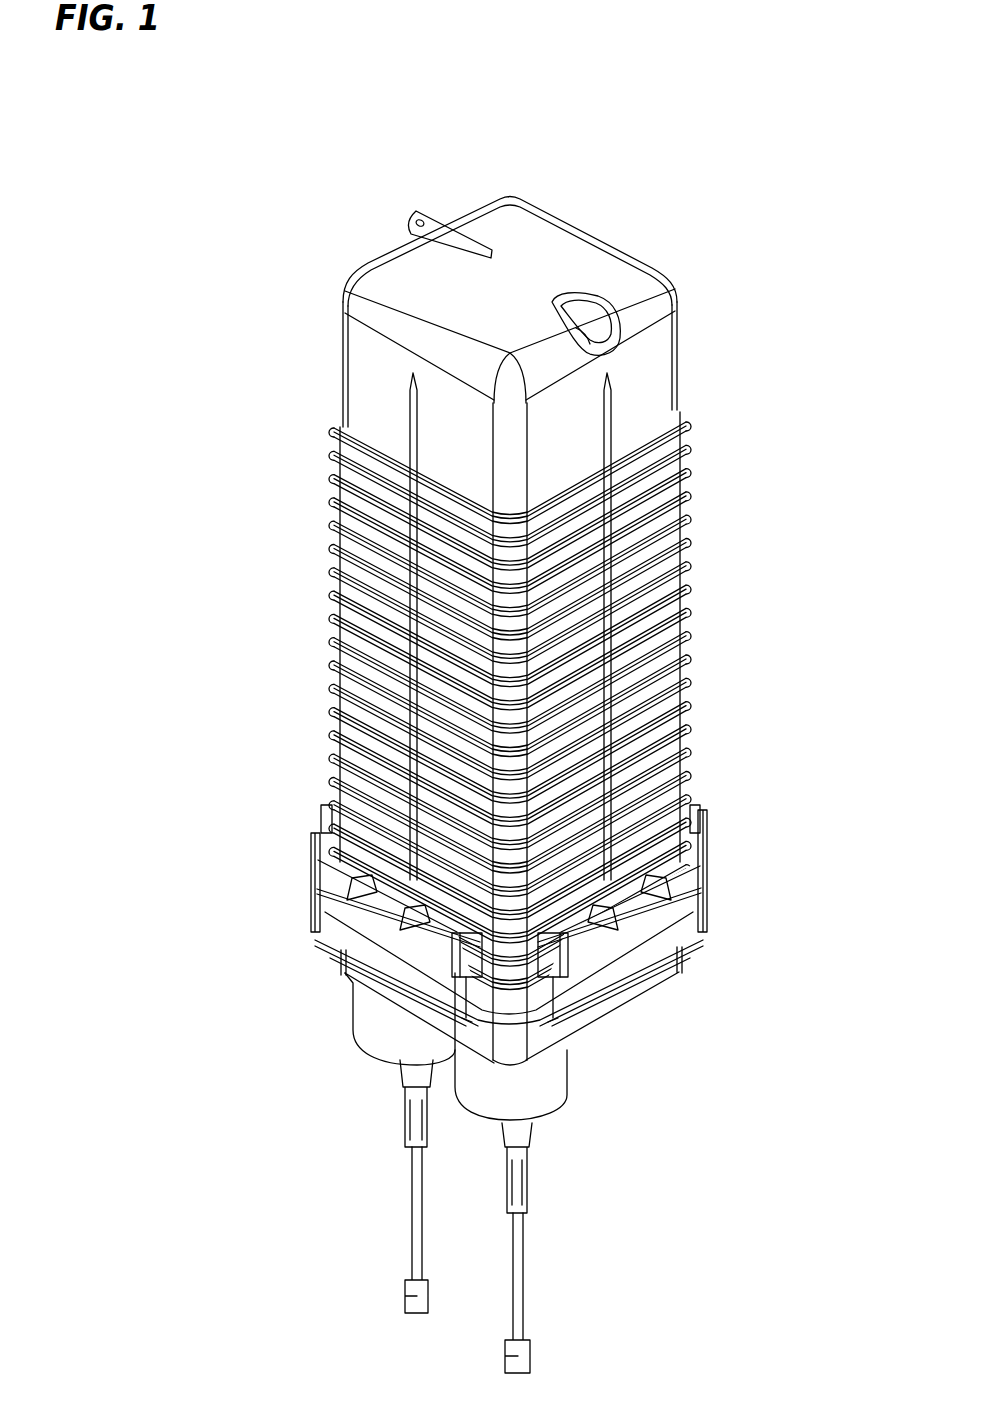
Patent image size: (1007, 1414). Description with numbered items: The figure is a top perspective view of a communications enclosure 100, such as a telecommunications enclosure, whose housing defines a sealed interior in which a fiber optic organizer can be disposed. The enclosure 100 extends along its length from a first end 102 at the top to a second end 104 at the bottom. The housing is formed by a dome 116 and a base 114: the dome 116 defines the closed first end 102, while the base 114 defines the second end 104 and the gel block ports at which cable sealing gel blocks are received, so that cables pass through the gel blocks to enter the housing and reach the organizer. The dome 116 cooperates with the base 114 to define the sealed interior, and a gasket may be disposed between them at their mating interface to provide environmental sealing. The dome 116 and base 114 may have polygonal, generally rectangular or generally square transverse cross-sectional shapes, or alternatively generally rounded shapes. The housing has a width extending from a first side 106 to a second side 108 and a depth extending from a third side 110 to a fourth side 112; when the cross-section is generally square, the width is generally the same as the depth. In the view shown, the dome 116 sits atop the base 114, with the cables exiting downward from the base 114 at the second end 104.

The communications enclosure 100 is at (285, 407).
The first end 102 is at (509, 186).
The second end 104 is at (597, 1043).
The first side 106 is at (367, 712).
The second side 108 is at (695, 558).
The third side 110 is at (623, 730).
The fourth side 112 is at (325, 532).
The base 114 is at (652, 988).
The dome 116 is at (678, 383).